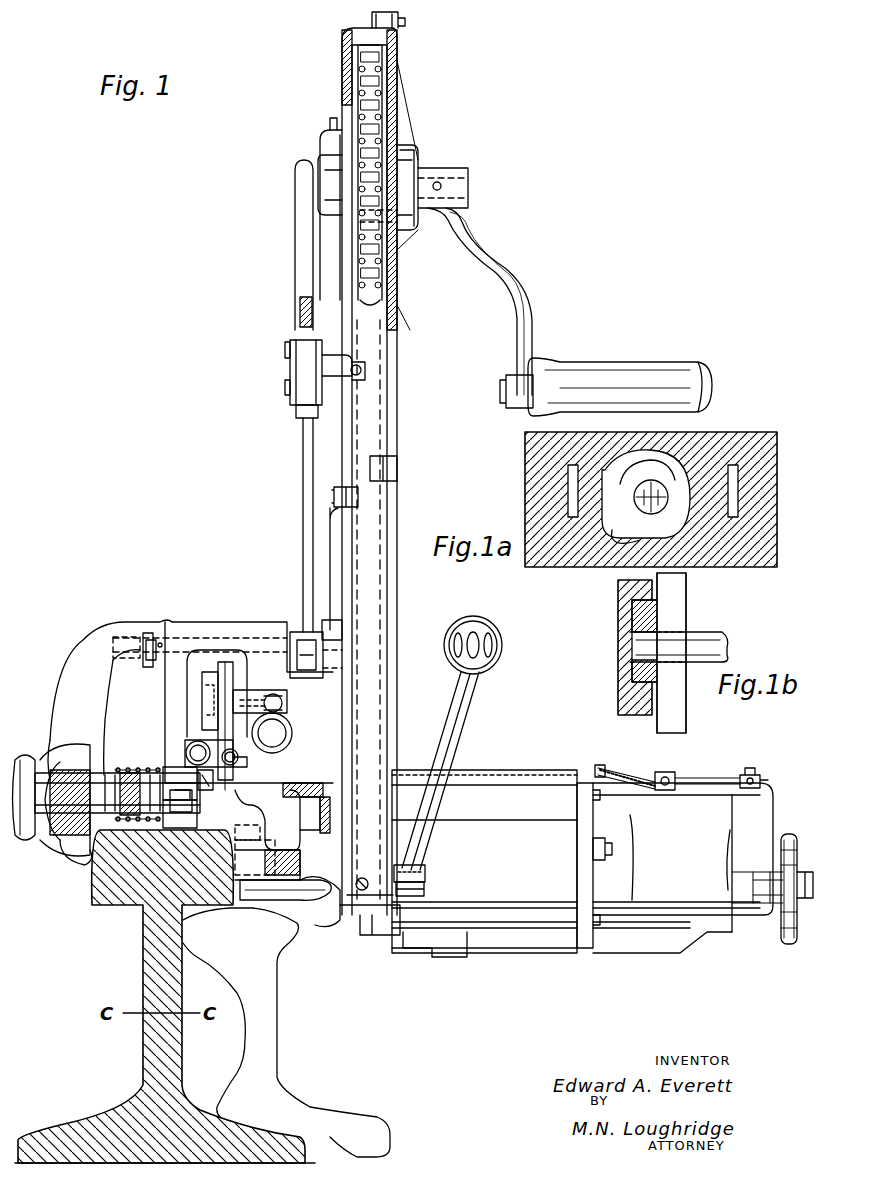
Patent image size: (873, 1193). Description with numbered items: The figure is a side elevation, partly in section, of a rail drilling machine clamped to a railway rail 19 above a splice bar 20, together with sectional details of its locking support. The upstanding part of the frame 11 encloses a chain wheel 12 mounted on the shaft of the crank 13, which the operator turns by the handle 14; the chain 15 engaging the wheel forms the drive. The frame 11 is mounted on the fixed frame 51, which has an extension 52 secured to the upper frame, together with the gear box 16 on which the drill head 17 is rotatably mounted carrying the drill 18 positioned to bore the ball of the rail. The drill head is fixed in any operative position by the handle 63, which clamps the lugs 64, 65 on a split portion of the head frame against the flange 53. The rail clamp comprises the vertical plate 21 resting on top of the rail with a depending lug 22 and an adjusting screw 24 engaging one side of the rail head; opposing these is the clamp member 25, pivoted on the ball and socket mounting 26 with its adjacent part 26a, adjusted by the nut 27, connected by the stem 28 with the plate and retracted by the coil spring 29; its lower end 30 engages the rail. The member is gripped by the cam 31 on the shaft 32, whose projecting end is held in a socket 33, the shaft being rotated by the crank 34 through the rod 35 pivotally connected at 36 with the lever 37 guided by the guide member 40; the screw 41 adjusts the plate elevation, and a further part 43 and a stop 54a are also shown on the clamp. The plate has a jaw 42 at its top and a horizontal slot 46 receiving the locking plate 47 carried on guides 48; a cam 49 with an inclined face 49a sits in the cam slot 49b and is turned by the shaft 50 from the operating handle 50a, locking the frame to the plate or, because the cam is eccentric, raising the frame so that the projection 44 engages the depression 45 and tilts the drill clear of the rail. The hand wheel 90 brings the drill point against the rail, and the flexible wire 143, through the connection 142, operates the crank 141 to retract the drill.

In FIG. 1, the upstanding part of the frame 11 is at (383, 427).
In FIG. 1, the chain wheel 12 is at (370, 120).
In FIG. 1, the crank 13 is at (512, 316).
In FIG. 1, the handle 14 is at (632, 355).
In FIG. 1, the chain 15 is at (383, 292).
In FIG. 1, the gear box 16 is at (484, 863).
In FIG. 1, the drill head 17 is at (680, 868).
In FIG. 1, the drill 18 is at (302, 900).
In FIG. 1, the rail 19 is at (140, 920).
In FIG. 1, the splice bar 20 is at (286, 1032).
In FIG. 1, the vertical plate 21 is at (167, 720).
In FIG. 1, the depending lug 22 is at (250, 898).
In FIG. 1, the adjusting screw 24 is at (267, 862).
In FIG. 1, the clamp member 25 is at (107, 700).
In FIG. 1, the ball and socket mounting 26 is at (50, 840).
In FIG. 1, the bushing 26a is at (71, 784).
In FIG. 1, the nut 27 is at (38, 765).
In FIG. 1, the stem 28 is at (123, 783).
In FIG. 1, the coil spring 29 is at (145, 783).
In FIG. 1, the lower end of clamp member 30 is at (80, 862).
In FIG. 1, the cam 31 is at (148, 634).
In FIG. 1, the shaft 32 is at (235, 612).
In FIG. 1, the socket 33 is at (116, 630).
In FIG. 1, the crank 34 is at (287, 672).
In FIG. 1, the rod 35 is at (303, 586).
In FIG. 1, the pivotal connection 36 is at (291, 387).
In FIG. 1, the lever 37 is at (303, 312).
In FIG. 1, the guide member 40 is at (305, 278).
In FIG. 1, the screw 41 is at (180, 789).
In FIG. 1, the jaw 42 is at (240, 660).
In FIG. 1, the latch 43 is at (237, 800).
In FIG. 1, the projection 44 is at (225, 787).
In FIG. 1, the depression 45 is at (217, 792).
In FIG. 1, the horizontal slot 46 is at (203, 683).
In FIG. 1A, the locking plate 47 is at (524, 458).
In FIG. 1B, the locking plate 47 is at (618, 702).
In FIG. 1A, the guides 48 is at (568, 490).
In FIG. 1A, the cam 49 is at (625, 520).
In FIG. 1B, the cam 49 is at (633, 675).
In FIG. 1A, the inclined face 49a is at (660, 462).
In FIG. 1B, the inclined face 49a is at (632, 620).
In FIG. 1A, the cam slot 49b is at (672, 535).
In FIG. 1, the shaft 50 is at (283, 703).
In FIG. 1A, the shaft 50 is at (638, 502).
In FIG. 1B, the shaft 50 is at (705, 630).
In FIG. 1, the operating handle 50a is at (286, 733).
In FIG. 1, the fixed frame 51 is at (218, 668).
In FIG. 1B, the fixed frame 51 is at (688, 702).
In FIG. 1, the extension 52 is at (330, 548).
In FIG. 1, the flange 53 is at (238, 814).
In FIG. 1, the roller 54a is at (186, 750).
In FIG. 1, the handle 63 is at (465, 698).
In FIG. 1, the lug 64 is at (425, 876).
In FIG. 1, the lug 65 is at (426, 896).
In FIG. 1, the hand wheel 90 is at (781, 927).
In FIG. 1, the crank 141 is at (746, 768).
In FIG. 1, the connection 142 is at (697, 776).
In FIG. 1, the flexible wire 143 is at (630, 768).